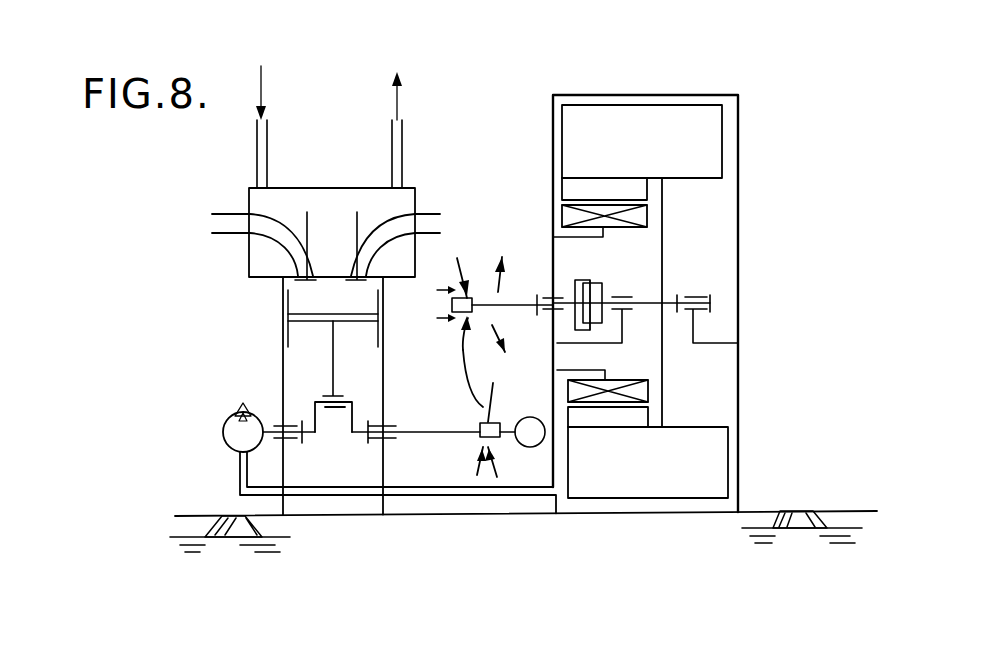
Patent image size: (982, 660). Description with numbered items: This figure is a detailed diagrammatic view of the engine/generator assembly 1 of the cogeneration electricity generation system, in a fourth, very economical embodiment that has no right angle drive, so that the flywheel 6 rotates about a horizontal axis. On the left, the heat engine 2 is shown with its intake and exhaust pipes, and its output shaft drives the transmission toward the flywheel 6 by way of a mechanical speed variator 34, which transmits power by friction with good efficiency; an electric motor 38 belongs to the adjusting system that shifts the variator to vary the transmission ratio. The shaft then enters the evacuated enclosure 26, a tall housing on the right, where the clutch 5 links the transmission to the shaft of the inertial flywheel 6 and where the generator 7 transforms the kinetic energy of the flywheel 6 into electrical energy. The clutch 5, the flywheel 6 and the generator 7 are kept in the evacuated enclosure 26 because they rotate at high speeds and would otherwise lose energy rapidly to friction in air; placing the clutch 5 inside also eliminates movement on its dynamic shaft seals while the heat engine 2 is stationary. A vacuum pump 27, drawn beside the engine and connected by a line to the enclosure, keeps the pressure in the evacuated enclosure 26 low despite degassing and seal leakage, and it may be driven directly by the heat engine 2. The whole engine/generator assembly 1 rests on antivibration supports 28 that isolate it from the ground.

The engine/generator assembly 1 is at (208, 299).
The heat engine 2 is at (198, 198).
The clutch 5 is at (578, 278).
The inertial flywheel 6 is at (688, 462).
The generator 7 is at (580, 189).
The evacuated enclosure 26 is at (700, 380).
The vacuum pump 27 is at (224, 431).
The antivibration supports 28 is at (220, 517).
The mechanical speed variator 34 is at (467, 372).
The electric motor 38 is at (533, 415).